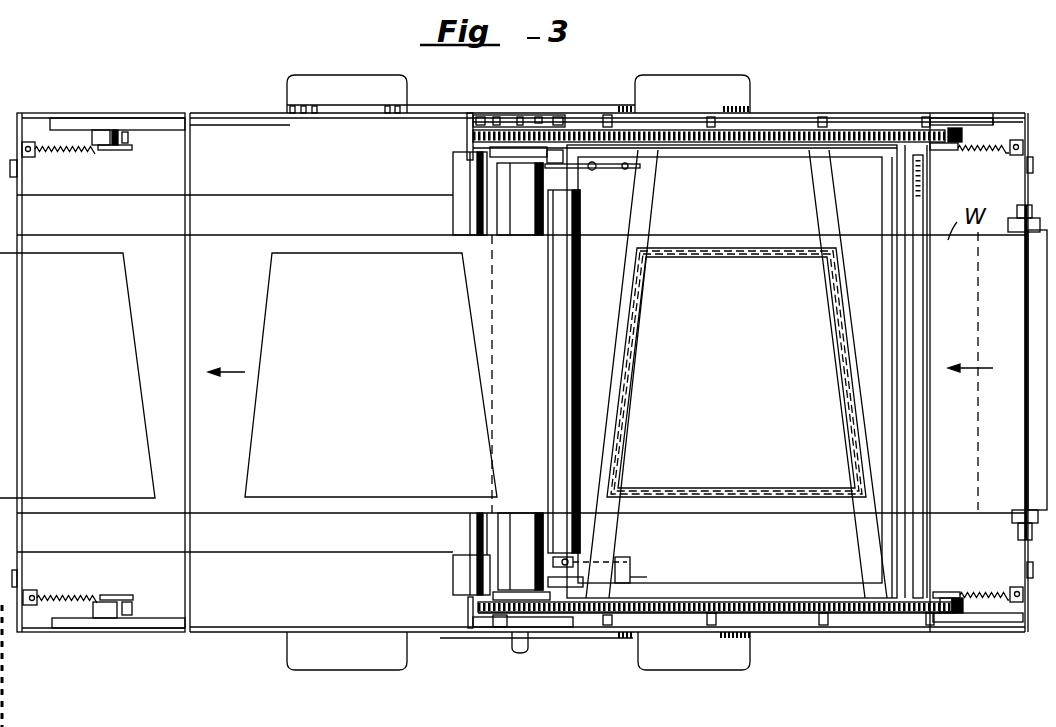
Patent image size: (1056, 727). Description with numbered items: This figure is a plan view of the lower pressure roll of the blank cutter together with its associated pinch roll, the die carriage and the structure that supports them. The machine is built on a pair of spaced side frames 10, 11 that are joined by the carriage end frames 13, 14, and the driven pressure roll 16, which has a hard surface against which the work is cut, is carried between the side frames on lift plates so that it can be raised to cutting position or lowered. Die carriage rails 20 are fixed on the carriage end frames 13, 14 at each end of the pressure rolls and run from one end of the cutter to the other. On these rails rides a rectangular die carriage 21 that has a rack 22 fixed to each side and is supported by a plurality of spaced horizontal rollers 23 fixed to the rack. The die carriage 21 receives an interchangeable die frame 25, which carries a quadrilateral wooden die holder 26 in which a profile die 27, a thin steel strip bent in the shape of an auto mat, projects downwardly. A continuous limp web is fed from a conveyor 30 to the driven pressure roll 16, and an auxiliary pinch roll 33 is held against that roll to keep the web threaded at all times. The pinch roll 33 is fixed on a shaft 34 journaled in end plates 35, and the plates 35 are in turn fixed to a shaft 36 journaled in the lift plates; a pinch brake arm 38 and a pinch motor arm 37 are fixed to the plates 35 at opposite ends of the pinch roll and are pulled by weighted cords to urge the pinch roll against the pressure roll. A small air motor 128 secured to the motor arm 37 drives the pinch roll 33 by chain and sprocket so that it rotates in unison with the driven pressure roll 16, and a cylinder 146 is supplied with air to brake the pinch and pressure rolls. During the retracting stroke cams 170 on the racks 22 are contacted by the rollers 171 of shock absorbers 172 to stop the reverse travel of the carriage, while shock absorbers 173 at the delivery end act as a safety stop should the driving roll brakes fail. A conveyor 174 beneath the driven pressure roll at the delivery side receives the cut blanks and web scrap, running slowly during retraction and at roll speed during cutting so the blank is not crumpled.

The side frame 10 is at (750, 633).
The side frame 11 is at (753, 110).
The carriage end frame 13 is at (997, 110).
The carriage end frame 14 is at (237, 113).
The driven pressure roll 16 is at (510, 205).
The die carriage rails 20 is at (240, 126).
The die carriage 21 is at (920, 203).
The rack 22 is at (880, 140).
The horizontal rollers 23 is at (825, 118).
The die frame 25 is at (577, 189).
The die holder 26 is at (650, 223).
The profile die 27 is at (627, 383).
The conveyor 30 is at (1012, 518).
The auxiliary pinch roll 33 is at (552, 283).
The shaft 34 is at (558, 178).
The end plates 35 is at (577, 168).
The shaft 36 is at (550, 595).
The pinch motor arm 37 is at (640, 577).
The pinch brake arm 38 is at (617, 167).
The air motor 128 is at (633, 565).
The cylinder 146 is at (592, 162).
The cams 170 is at (963, 128).
The rollers 171 is at (955, 613).
The shock absorbers 172 is at (947, 150).
The shock absorbers 173 is at (103, 128).
The conveyor 174 is at (370, 196).